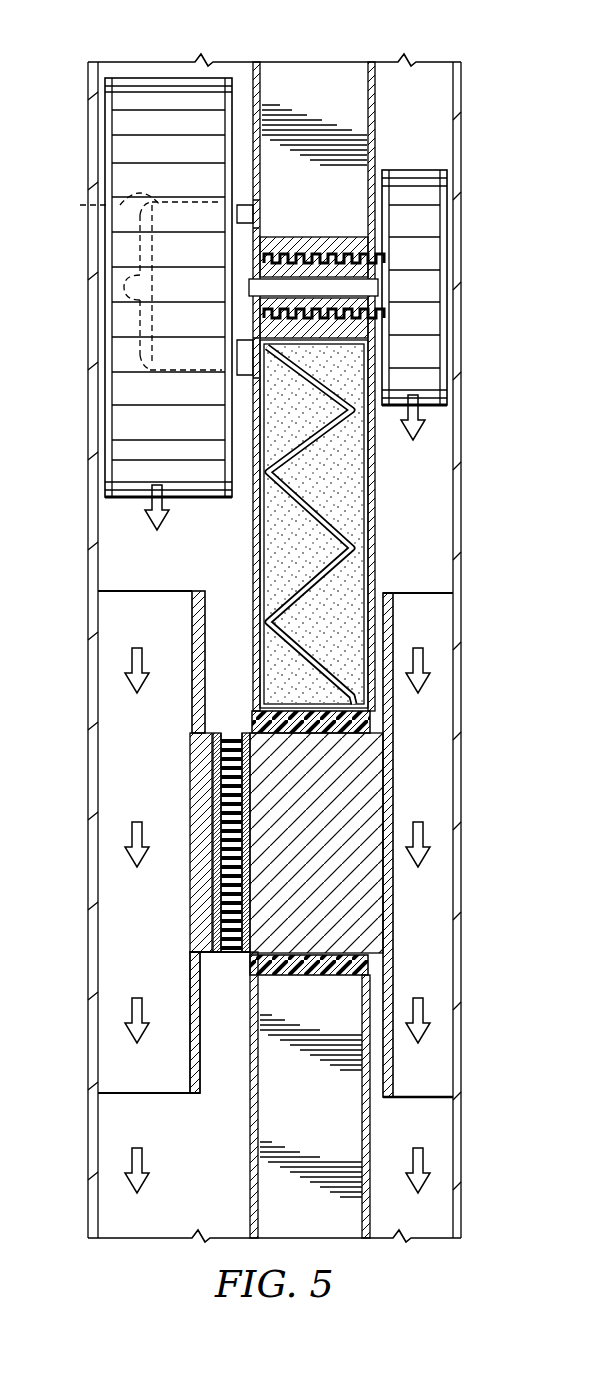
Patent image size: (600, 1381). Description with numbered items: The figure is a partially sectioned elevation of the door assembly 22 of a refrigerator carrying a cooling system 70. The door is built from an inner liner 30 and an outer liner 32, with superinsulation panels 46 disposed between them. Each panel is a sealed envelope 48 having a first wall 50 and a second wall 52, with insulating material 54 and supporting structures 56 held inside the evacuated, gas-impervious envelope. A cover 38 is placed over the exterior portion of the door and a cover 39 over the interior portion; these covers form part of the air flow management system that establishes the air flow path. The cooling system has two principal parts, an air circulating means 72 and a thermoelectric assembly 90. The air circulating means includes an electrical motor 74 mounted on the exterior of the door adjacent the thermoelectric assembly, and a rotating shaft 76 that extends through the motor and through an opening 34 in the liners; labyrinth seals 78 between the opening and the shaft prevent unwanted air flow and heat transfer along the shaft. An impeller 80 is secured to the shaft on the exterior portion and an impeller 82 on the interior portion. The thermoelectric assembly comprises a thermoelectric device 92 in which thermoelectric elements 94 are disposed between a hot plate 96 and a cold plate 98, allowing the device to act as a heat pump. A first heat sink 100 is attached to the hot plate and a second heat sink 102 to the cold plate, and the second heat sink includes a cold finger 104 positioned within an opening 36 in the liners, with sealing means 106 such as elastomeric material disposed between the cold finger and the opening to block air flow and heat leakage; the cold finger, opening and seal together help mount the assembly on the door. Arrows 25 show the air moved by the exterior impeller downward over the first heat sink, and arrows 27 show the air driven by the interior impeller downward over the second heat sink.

The door assembly 22 is at (485, 599).
The arrows 25 is at (130, 658).
The arrows 27 is at (426, 670).
The inner liner 30 is at (376, 104).
The outer liner 32 is at (253, 72).
The opening 34 is at (294, 250).
The opening 36 is at (288, 712).
The cover 38 is at (96, 620).
The cover 39 is at (459, 528).
The superinsulation panels 46 is at (300, 58).
The sealed envelope 48 is at (356, 64).
The first wall 50 is at (258, 624).
The second wall 52 is at (368, 559).
The insulating material 54 is at (316, 576).
The supporting structures 56 is at (262, 514).
The cooling system 70 is at (82, 555).
The air circulating means 72 is at (132, 62).
The electrical motor 74 is at (106, 205).
The rotating shaft 76 is at (378, 291).
The labyrinth seals 78 is at (324, 246).
The impeller 80 is at (110, 427).
The impeller 82 is at (442, 267).
The thermoelectric assembly 90 is at (176, 774).
The thermoelectric device 92 is at (230, 972).
The thermoelectric elements 94 is at (226, 905).
The hot plate 96 is at (200, 964).
The cold plate 98 is at (240, 732).
The first heat sink 100 is at (102, 1094).
The second heat sink 102 is at (452, 902).
The cold finger 104 is at (390, 796).
The sealing means 106 is at (384, 733).